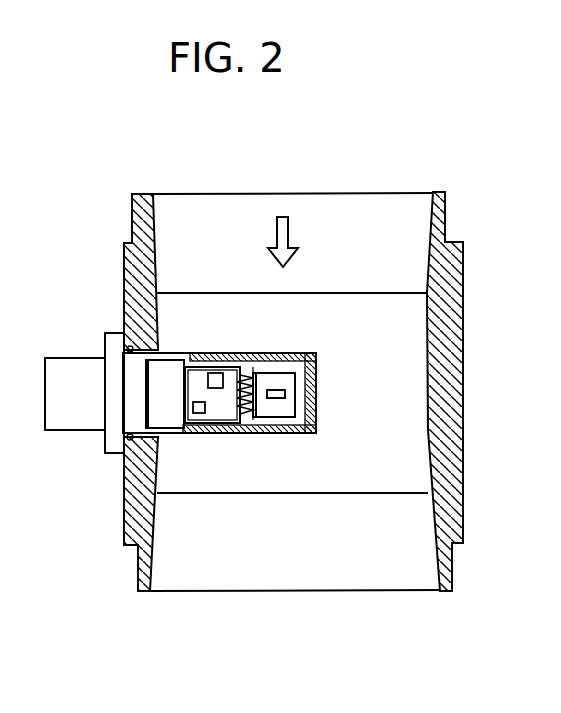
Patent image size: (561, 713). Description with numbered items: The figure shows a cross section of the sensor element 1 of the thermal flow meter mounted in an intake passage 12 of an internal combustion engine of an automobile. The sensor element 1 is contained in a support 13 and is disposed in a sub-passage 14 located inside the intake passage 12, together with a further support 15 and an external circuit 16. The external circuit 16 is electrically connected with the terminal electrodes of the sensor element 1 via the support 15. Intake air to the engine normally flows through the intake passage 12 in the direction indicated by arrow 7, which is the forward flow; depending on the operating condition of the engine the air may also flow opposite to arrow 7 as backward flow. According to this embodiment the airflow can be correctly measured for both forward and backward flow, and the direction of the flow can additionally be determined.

The sensor element 1 is at (277, 398).
The arrow 7 is at (286, 240).
The intake passage 12 is at (147, 215).
The support 13 is at (278, 382).
The sub-passage 14 is at (297, 435).
The support 15 is at (222, 433).
The external circuit 16 is at (213, 412).